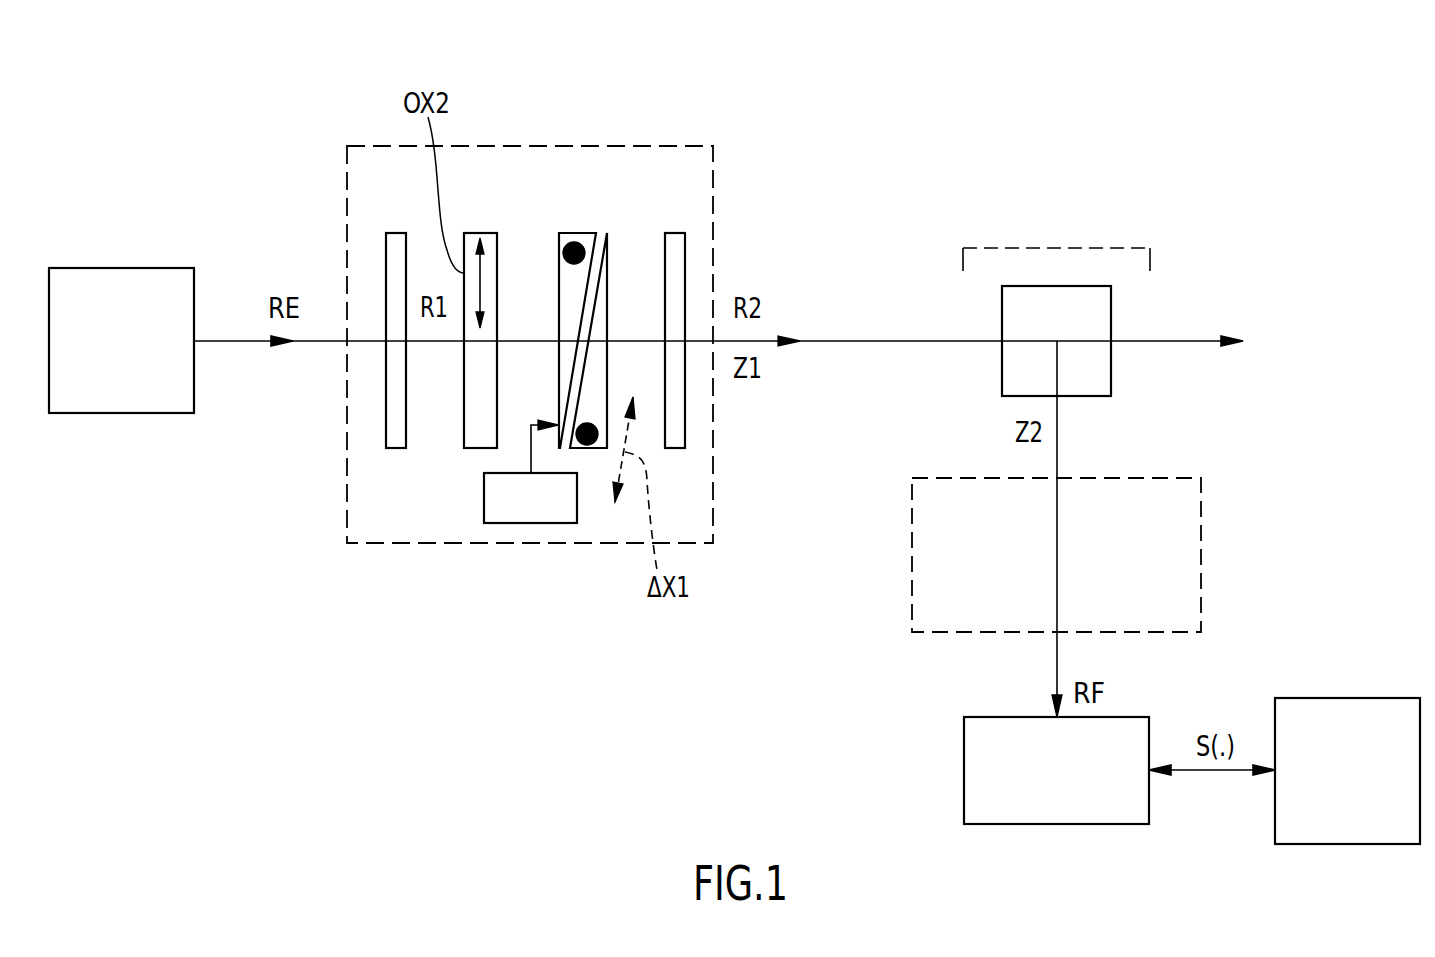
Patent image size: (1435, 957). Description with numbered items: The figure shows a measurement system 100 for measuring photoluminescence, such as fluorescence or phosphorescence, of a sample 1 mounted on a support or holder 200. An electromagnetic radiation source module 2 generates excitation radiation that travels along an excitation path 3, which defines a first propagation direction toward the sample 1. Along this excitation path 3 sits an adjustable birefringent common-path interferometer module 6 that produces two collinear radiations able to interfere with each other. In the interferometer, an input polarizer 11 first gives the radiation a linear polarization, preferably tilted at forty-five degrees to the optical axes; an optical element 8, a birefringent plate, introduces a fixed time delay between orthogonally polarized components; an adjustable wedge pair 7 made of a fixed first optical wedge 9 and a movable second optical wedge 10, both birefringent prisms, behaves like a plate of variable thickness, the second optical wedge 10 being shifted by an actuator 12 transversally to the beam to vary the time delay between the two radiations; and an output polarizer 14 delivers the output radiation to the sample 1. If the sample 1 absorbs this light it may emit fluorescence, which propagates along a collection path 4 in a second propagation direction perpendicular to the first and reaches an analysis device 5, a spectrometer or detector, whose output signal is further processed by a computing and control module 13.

The measurement system 100 is at (760, 55).
The electromagnetic radiation source module 2 is at (130, 413).
The input polarizer 11 is at (386, 262).
The optical element 8 is at (464, 413).
The first optical wedge 9 is at (559, 278).
The adjustable wedge pair 7 is at (573, 207).
The second optical wedge 10 is at (600, 303).
The actuator 12 is at (543, 512).
The output polarizer 14 is at (685, 422).
The excitation path 3 is at (869, 380).
The sample 1 is at (1002, 325).
The support or holder 200 is at (1107, 248).
The collection path 4 is at (1103, 430).
The adjustable birefringent common-path interferometer module 6 is at (1218, 552).
The analysis device 5 is at (964, 768).
The computing and control module 13 is at (1363, 787).